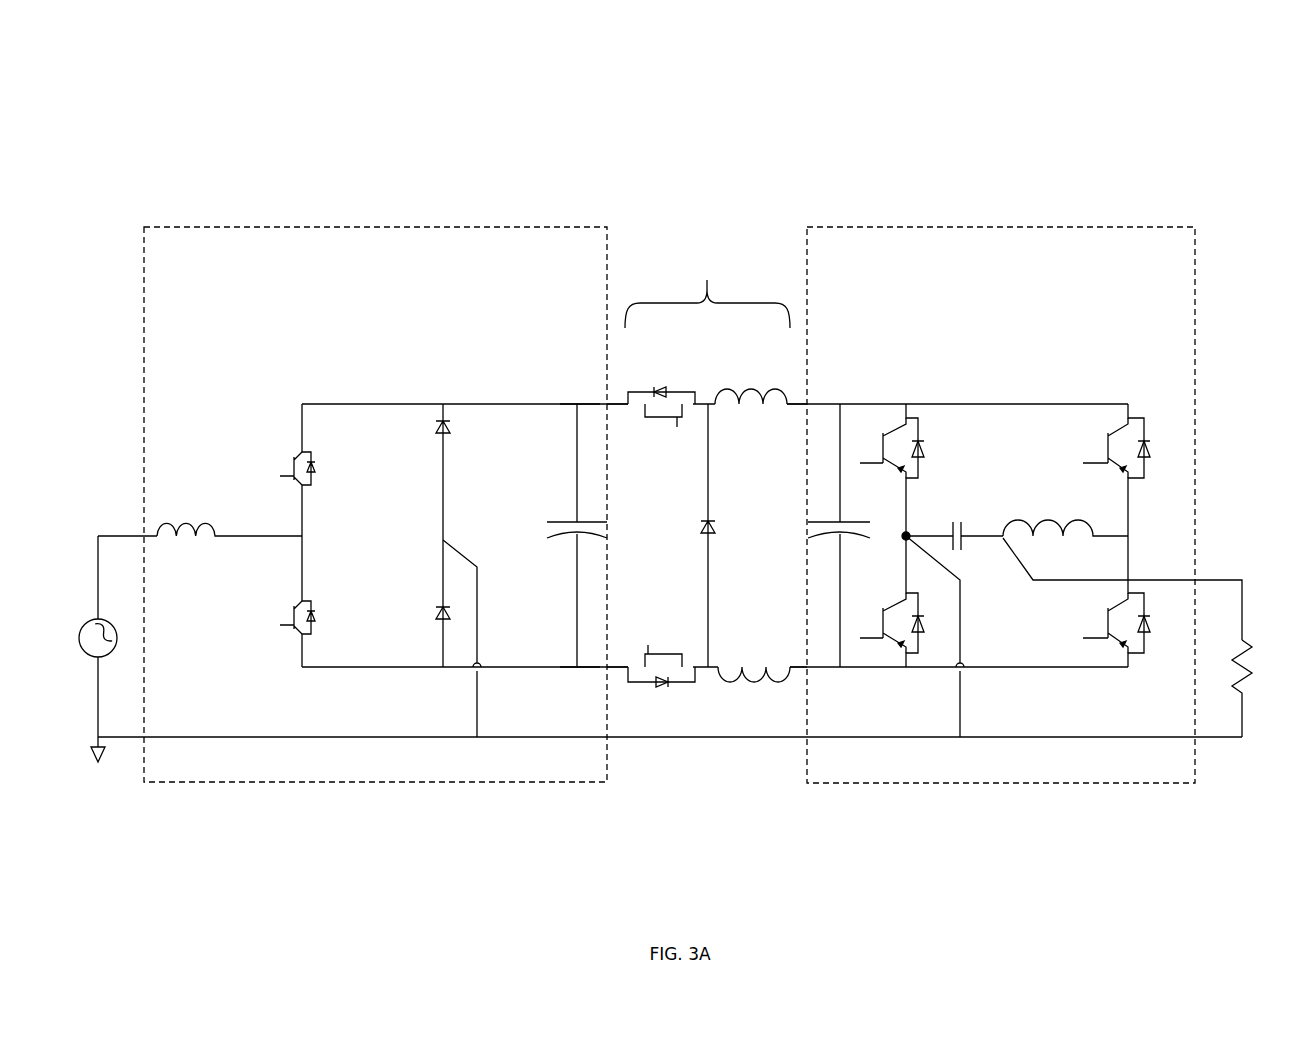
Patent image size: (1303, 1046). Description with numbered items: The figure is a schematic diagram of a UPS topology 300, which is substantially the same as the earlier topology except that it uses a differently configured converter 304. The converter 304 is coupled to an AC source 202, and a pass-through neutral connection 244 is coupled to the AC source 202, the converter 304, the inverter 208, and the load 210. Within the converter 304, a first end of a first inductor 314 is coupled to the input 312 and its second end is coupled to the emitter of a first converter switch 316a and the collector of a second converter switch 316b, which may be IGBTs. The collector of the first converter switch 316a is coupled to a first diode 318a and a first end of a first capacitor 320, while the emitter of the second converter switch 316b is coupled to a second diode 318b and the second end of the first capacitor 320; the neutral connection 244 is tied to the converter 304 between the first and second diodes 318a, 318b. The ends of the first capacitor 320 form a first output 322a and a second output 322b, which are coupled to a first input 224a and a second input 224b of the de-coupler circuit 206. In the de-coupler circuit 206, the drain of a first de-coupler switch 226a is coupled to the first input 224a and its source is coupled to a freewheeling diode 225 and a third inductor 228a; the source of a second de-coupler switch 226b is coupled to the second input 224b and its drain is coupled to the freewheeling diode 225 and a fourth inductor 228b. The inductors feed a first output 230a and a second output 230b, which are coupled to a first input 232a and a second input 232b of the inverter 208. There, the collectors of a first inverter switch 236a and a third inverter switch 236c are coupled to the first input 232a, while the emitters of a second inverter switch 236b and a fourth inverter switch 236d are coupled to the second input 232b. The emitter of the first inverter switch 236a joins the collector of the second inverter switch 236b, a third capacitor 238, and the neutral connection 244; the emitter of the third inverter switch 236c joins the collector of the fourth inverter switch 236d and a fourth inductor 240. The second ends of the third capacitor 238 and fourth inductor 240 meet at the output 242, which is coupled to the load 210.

The UPS topology 300 is at (1170, 108).
The converter 304 is at (360, 225).
The inverter 208 is at (1028, 223).
The de-coupler circuit 206 is at (707, 287).
The AC source 202 is at (87, 649).
The input 312 is at (122, 535).
The first inductor 314 is at (229, 513).
The first converter switch 316a is at (278, 470).
The second converter switch 316b is at (277, 601).
The first diode 318a is at (414, 535).
The second diode 318b is at (432, 638).
The first capacitor 320 is at (570, 535).
The first output 322a is at (576, 403).
The second output 322b is at (577, 668).
The first input 224a is at (617, 407).
The second input 224b is at (620, 663).
The first de-coupler switch 226a is at (661, 390).
The second de-coupler switch 226b is at (661, 681).
The third inductor 228a is at (751, 379).
The fourth inductor 228b is at (754, 692).
The first output 230a is at (793, 407).
The second output 230b is at (795, 663).
The freewheeling diode 225 is at (685, 535).
The first input 232a is at (841, 404).
The second input 232b is at (840, 668).
The first inverter switch 236a is at (920, 470).
The second inverter switch 236b is at (886, 601).
The third inverter switch 236c is at (1099, 492).
The fourth inverter switch 236d is at (1100, 623).
The third capacitor 238 is at (952, 519).
The fourth inductor 240 is at (1065, 512).
The output 242 is at (1222, 578).
The load 210 is at (1265, 688).
The pass-through neutral connection 244 is at (698, 738).